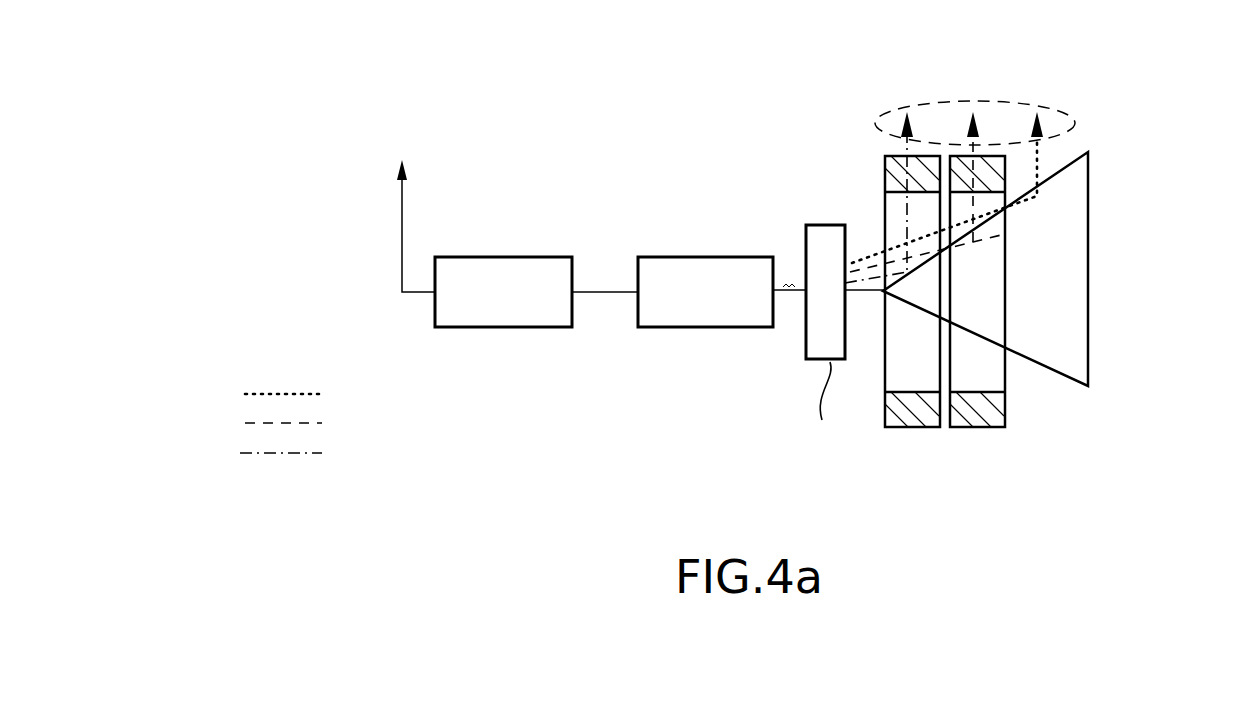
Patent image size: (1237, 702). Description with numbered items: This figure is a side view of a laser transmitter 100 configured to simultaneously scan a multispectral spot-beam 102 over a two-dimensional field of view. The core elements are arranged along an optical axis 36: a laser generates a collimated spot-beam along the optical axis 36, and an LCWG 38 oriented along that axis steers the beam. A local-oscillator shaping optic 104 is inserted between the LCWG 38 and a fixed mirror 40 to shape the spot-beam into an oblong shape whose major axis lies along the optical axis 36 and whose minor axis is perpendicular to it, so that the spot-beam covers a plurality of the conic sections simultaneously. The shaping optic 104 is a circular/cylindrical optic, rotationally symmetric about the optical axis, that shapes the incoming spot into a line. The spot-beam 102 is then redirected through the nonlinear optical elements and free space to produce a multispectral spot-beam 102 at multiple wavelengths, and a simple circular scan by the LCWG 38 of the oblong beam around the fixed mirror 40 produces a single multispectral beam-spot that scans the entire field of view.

The laser transmitter 100 is at (596, 120).
The optical axis 36 is at (506, 328).
The LCWG 38 is at (705, 328).
The L0 optic 104 is at (822, 222).
The multispectral spot-beam 102 is at (896, 110).
The fixed mirror 40 is at (1088, 248).